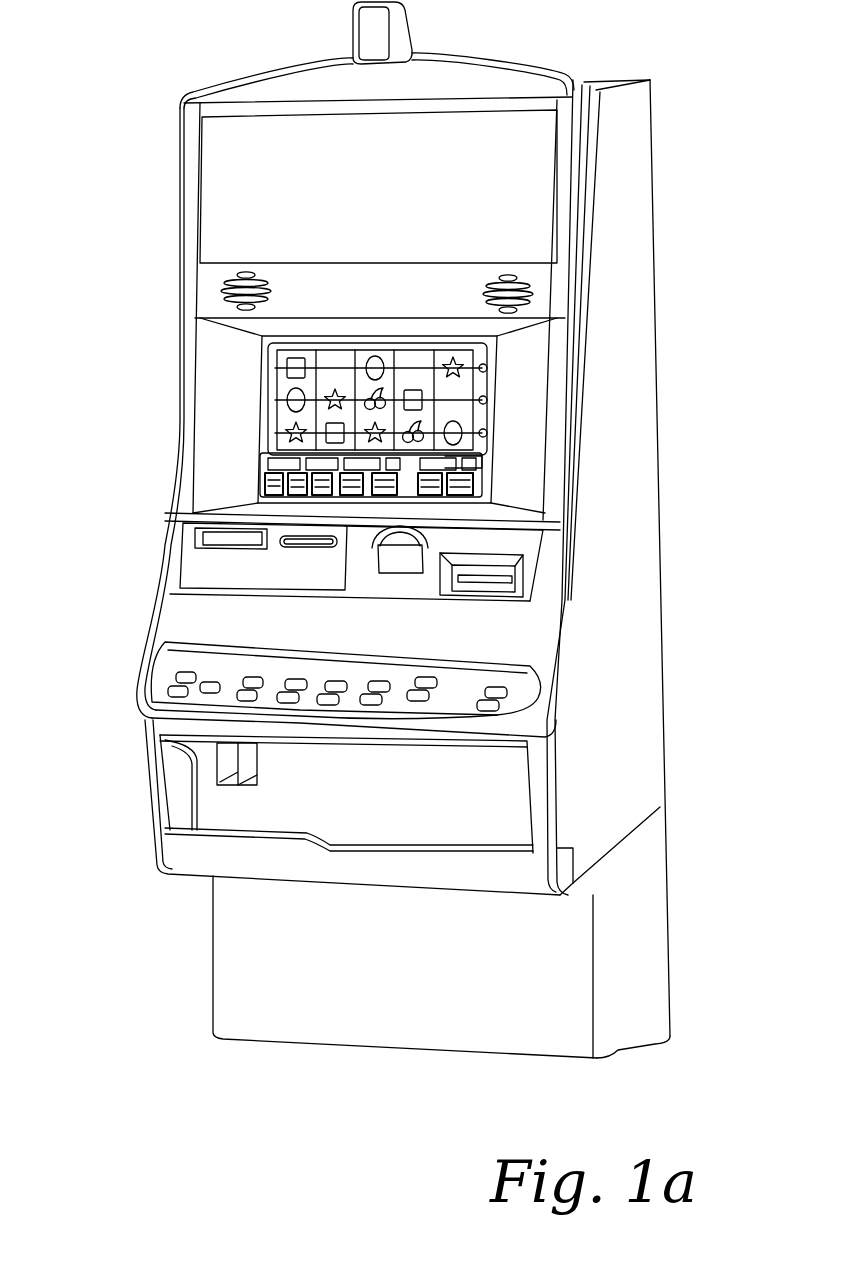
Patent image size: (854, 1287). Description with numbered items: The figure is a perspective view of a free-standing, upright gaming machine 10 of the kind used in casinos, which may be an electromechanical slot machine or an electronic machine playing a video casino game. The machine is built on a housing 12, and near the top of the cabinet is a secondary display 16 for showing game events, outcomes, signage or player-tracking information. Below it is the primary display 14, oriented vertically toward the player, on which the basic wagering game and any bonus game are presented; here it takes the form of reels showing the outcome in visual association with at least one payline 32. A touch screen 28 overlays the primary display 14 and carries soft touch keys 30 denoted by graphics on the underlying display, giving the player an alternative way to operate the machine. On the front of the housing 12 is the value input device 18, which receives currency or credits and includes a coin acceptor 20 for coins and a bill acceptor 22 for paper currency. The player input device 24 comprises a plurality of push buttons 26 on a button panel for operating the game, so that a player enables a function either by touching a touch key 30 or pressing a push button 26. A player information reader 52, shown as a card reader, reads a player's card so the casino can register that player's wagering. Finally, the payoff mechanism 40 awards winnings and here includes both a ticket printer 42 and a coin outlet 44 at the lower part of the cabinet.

The gaming machine 10 is at (134, 103).
The housing 12 is at (650, 212).
The primary display 14 is at (265, 373).
The secondary display 16 is at (220, 197).
The value input device 18 is at (428, 546).
The coin acceptor 20 is at (402, 557).
The bill acceptor 22 is at (492, 590).
The player input device 24 is at (487, 490).
The push buttons 26 is at (367, 693).
The touch screen 28 is at (490, 464).
The touch keys 30 is at (262, 487).
The payline 32 is at (308, 352).
The payoff mechanism 40 is at (215, 543).
The ticket printer 42 is at (205, 528).
The coin outlet 44 is at (223, 762).
The player information reader 52 is at (288, 548).